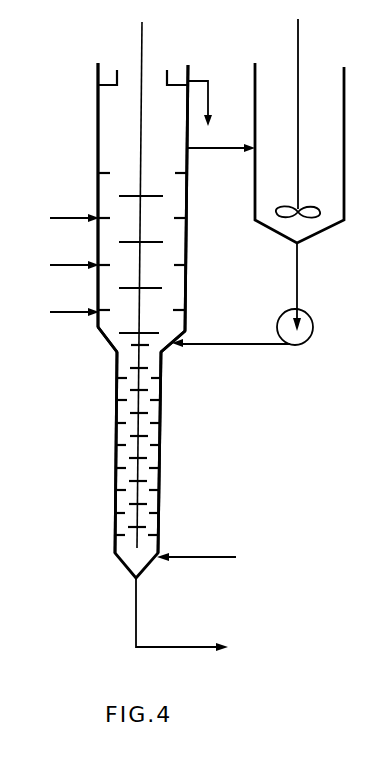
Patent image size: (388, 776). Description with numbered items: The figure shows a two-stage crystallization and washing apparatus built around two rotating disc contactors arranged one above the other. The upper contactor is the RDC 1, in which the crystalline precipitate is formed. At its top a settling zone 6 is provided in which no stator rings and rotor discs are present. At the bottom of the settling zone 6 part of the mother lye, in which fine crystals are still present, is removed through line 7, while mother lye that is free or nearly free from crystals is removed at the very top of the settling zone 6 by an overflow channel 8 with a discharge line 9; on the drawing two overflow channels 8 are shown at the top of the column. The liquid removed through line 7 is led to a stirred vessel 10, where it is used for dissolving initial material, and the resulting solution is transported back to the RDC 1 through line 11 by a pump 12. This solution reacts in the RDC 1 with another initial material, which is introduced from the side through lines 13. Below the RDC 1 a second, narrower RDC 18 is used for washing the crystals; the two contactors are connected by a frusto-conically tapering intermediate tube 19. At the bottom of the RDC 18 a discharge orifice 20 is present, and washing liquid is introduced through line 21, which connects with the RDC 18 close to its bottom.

The RDC 1 is at (143, 300).
The settling zone 6 is at (143, 197).
The line 7 is at (221, 137).
The overflow channel 8 is at (143, 66).
The discharge line 9 is at (207, 103).
The vessel 10 is at (299, 131).
The line 11 is at (231, 334).
The pump 12 is at (309, 294).
The lines 13 is at (57, 265).
The second RDC 18 is at (152, 449).
The frusto conically tapering intermediate tube 19 is at (132, 341).
The discharge orifice 20 is at (182, 614).
The line 21 is at (196, 548).